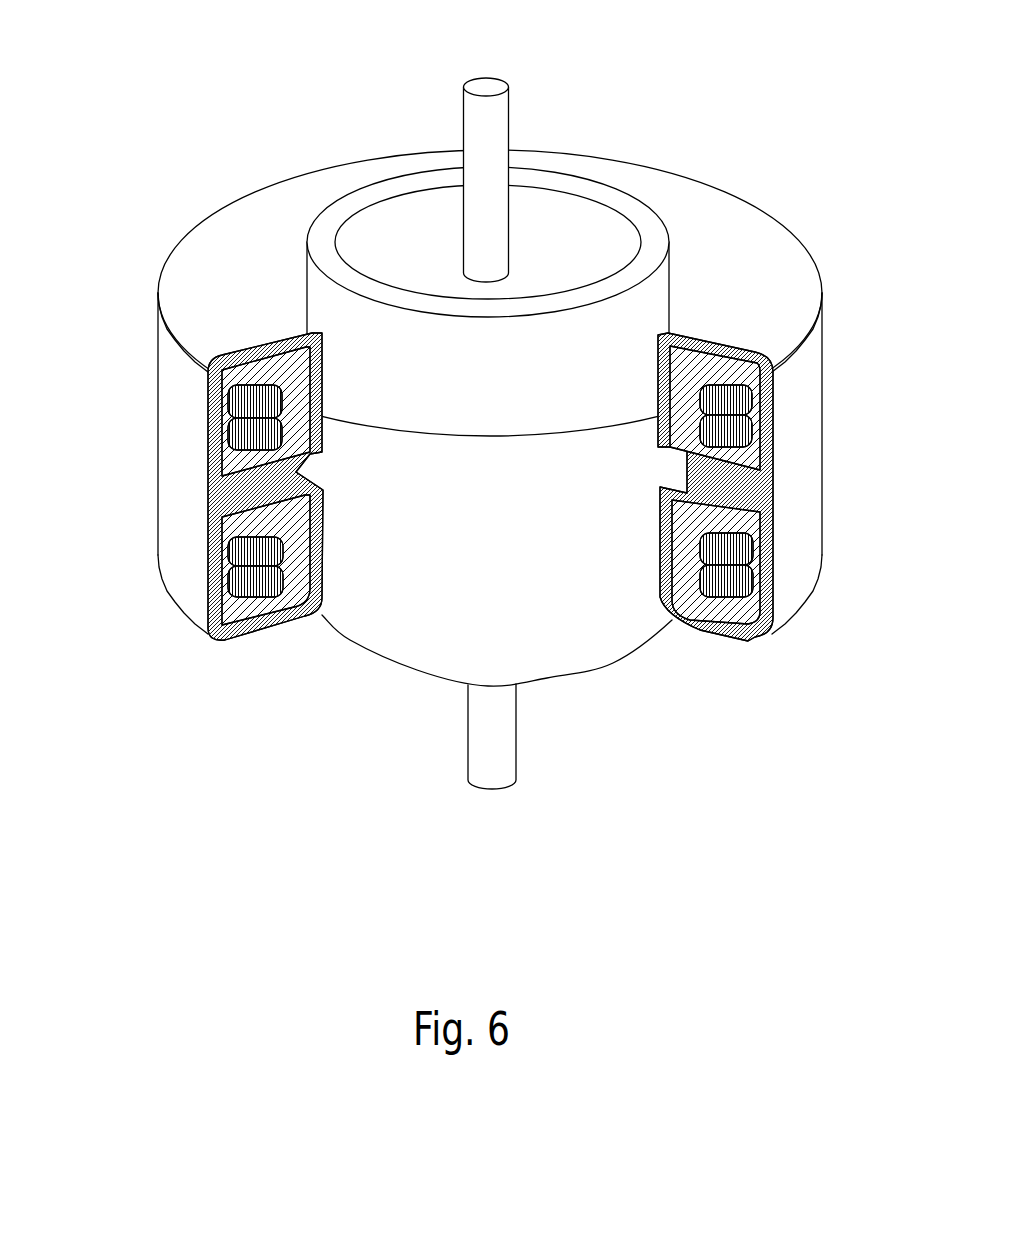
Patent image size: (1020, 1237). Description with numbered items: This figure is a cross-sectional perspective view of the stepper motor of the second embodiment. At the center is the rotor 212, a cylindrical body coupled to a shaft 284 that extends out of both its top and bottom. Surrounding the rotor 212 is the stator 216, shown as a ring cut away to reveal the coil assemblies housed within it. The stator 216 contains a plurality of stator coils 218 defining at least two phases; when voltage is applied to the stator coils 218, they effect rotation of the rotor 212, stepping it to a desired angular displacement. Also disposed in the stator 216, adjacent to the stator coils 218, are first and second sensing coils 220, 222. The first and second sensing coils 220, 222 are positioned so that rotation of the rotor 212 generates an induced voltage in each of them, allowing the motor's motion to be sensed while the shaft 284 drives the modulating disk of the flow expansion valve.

The rotor 212 is at (630, 207).
The stator 216 is at (183, 578).
The stator coils 218 is at (253, 557).
The first sensing coil 220 is at (737, 435).
The second sensing coil 222 is at (737, 583).
The shaft 284 is at (493, 122).